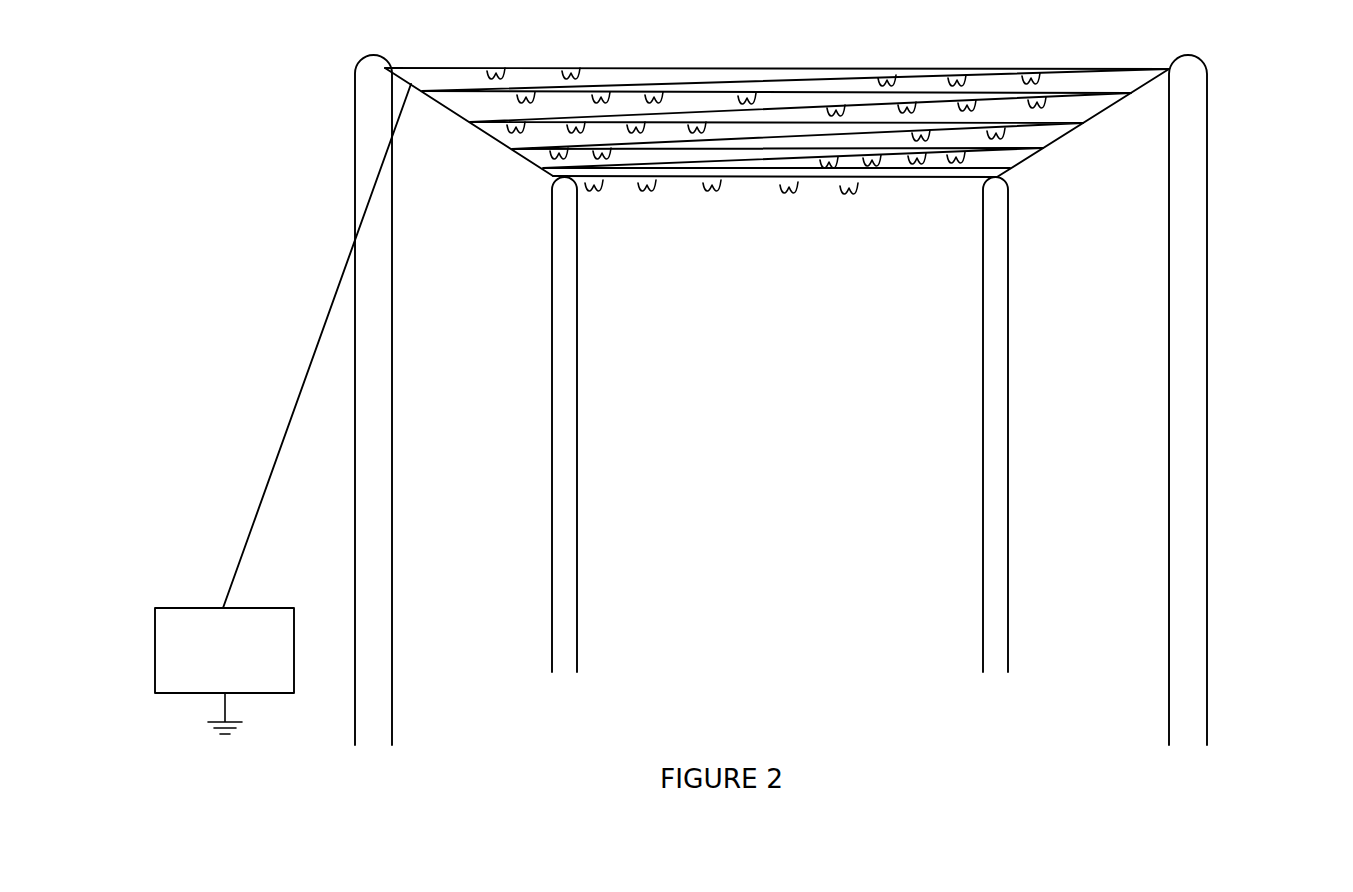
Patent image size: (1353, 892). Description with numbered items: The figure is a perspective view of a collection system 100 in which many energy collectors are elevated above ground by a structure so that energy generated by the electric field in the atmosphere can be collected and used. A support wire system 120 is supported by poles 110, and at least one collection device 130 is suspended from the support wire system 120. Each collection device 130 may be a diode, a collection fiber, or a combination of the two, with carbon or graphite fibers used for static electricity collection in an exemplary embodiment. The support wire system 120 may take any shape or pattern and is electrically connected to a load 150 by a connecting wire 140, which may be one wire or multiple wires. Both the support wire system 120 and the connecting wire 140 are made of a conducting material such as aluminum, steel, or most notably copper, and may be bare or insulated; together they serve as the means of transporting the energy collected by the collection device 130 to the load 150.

The collection system 100 is at (1302, 166).
The poles 110 is at (378, 340).
The support wire system 120 is at (1038, 128).
The collection device 130 is at (855, 192).
The connecting wire 140 is at (290, 412).
The load 150 is at (257, 667).